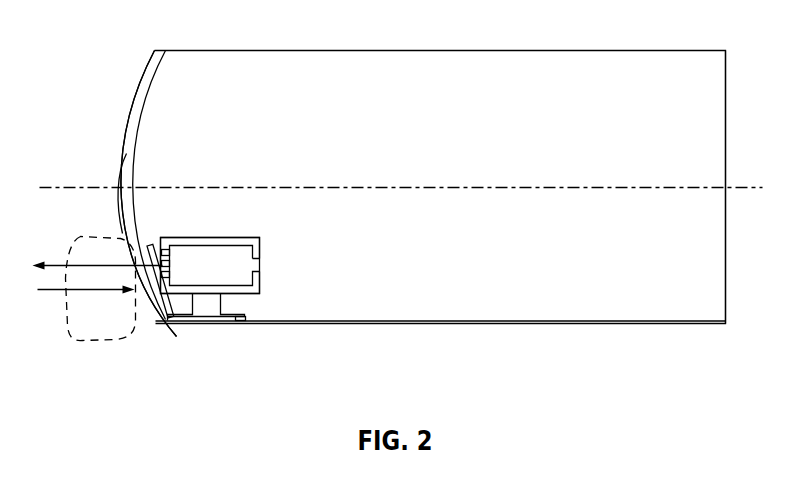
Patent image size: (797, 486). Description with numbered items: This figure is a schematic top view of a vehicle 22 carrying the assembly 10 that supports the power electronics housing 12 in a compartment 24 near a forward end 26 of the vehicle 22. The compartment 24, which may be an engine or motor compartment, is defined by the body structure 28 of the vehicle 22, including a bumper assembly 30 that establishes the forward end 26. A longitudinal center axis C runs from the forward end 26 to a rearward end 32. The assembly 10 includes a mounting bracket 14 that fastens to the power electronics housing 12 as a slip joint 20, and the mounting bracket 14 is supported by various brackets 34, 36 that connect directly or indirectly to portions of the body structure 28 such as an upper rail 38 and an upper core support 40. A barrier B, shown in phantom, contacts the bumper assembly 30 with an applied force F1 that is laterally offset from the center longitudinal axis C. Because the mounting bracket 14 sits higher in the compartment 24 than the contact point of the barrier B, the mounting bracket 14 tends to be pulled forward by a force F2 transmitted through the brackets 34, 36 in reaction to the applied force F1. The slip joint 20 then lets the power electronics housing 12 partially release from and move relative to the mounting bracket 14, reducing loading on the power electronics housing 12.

The assembly 10 is at (238, 219).
The power electronics housing 12 is at (242, 250).
The mounting bracket 14 is at (242, 291).
The slip joint 20 is at (263, 263).
The vehicle 22 is at (603, 345).
The compartment 24 is at (254, 110).
The forward end 26 is at (117, 186).
The body structure 28 is at (133, 97).
The bumper assembly 30 is at (120, 157).
The rearward end 32 is at (723, 243).
The bracket 34 is at (209, 300).
The bracket 36 is at (158, 257).
The upper rail 38 is at (237, 318).
The upper core support 40 is at (166, 318).
The applied force F1 is at (57, 289).
The force F2 is at (56, 258).
The barrier B is at (88, 340).
The longitudinal center axis C is at (738, 183).